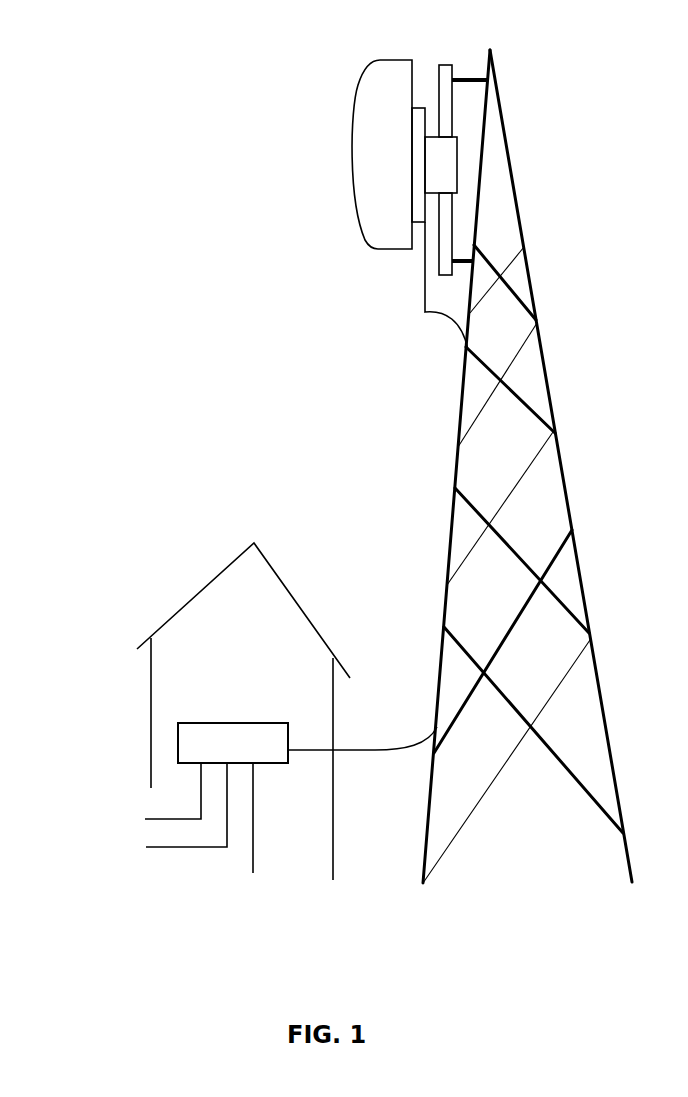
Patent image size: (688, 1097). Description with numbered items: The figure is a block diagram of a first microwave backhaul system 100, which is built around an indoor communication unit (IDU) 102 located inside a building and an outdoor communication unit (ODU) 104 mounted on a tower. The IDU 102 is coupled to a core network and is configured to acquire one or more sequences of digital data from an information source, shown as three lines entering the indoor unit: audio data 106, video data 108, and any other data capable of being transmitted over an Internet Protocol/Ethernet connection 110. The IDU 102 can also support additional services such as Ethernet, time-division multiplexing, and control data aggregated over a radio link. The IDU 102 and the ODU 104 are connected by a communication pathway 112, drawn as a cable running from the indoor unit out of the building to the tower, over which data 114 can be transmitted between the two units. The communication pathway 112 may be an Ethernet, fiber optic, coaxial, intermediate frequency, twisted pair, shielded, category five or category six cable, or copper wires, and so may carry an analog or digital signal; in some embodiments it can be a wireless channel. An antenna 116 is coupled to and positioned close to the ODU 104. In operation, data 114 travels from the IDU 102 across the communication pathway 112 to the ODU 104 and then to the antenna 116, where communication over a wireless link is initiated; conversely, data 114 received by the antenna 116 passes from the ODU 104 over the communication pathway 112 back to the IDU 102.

The microwave backhaul system 100 is at (125, 136).
The indoor communication unit (IDU) 102 is at (196, 723).
The outdoor communication unit (ODU) 104 is at (422, 72).
The audio data 106 is at (173, 791).
The video data 108 is at (186, 805).
The Internet Protocol (IP)/Ethernet connection 110 is at (253, 851).
The communication pathway 112 is at (382, 755).
The data 114 is at (384, 732).
The antenna 116 is at (346, 97).